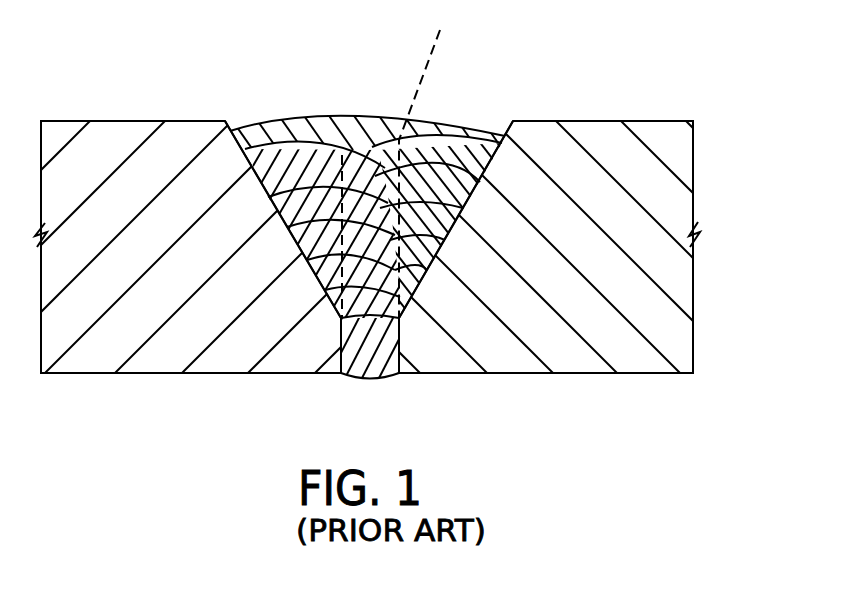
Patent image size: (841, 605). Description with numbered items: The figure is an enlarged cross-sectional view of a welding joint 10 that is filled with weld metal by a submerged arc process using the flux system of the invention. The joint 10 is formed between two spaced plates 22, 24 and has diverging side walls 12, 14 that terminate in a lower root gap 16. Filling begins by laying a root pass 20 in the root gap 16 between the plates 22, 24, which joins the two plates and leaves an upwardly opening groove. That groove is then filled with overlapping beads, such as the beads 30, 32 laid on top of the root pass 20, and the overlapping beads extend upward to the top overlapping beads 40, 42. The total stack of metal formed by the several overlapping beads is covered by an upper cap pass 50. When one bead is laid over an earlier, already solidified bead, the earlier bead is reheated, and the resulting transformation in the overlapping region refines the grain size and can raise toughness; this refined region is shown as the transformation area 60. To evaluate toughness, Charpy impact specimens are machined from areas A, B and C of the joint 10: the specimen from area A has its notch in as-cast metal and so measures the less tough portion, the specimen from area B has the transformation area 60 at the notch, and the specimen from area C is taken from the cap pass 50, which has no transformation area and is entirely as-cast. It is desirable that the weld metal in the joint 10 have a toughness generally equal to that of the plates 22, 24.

The joint 10 is at (399, 219).
The diverging side wall 12 is at (248, 120).
The diverging side wall 14 is at (478, 122).
The root gap 16 is at (355, 376).
The root pass 20 is at (378, 367).
The plate 22 is at (105, 355).
The plate 24 is at (584, 360).
The bead 30 is at (336, 302).
The bead 32 is at (415, 305).
The top overlapping bead 40 is at (302, 118).
The top overlapping bead 42 is at (443, 118).
The cap pass 50 is at (357, 118).
The transformation area 60 is at (403, 159).
The area A is at (290, 224).
The area B is at (436, 233).
The area C is at (333, 110).